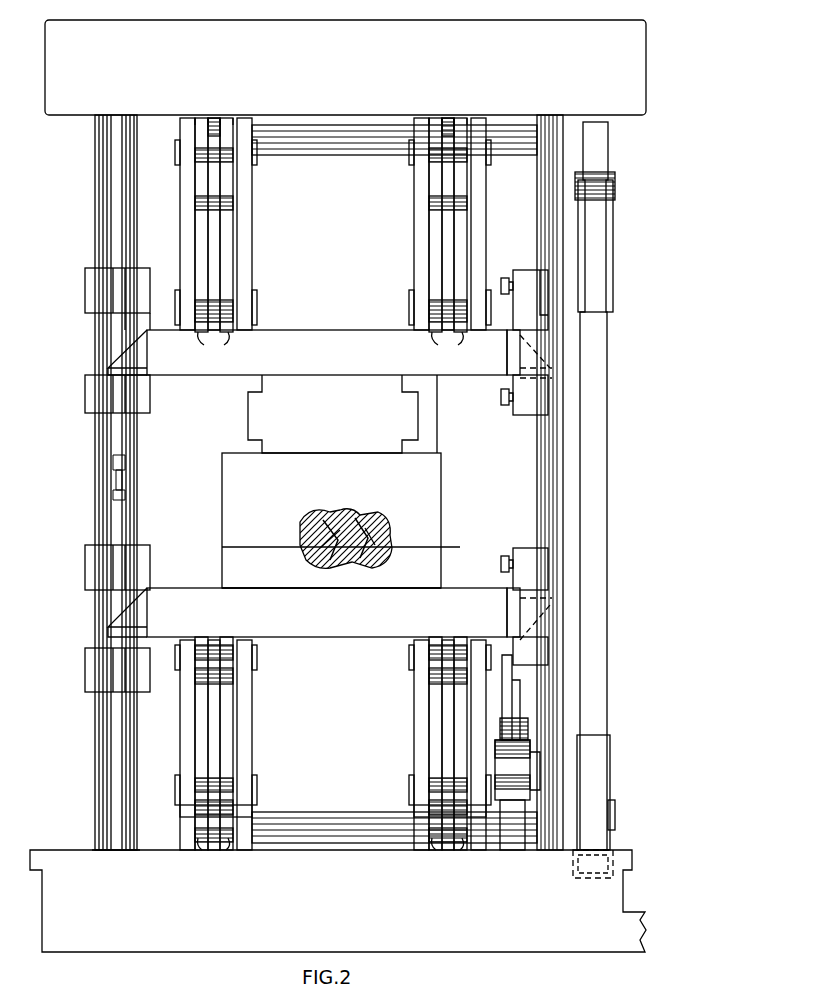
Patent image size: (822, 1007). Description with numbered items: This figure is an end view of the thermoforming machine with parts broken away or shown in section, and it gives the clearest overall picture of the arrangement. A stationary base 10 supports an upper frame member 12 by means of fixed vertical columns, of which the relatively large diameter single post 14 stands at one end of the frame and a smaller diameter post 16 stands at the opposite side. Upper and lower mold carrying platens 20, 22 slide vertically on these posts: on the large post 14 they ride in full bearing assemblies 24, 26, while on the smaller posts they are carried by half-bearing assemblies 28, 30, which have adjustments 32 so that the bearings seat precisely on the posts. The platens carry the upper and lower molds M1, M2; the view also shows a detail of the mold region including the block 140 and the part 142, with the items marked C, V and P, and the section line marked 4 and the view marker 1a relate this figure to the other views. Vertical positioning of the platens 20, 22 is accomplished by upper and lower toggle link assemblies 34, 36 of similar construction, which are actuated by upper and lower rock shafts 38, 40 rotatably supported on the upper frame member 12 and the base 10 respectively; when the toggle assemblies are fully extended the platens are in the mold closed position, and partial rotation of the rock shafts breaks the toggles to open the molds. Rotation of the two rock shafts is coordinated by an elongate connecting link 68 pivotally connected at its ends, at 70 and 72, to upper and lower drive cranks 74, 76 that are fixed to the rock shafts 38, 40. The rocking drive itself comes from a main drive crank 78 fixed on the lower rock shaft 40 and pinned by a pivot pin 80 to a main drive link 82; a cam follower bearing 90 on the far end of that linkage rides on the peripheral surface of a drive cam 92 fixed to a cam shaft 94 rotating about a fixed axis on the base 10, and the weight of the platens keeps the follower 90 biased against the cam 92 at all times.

The section line 4- 4 is at (268, 882).
The stationary base 10 is at (354, 903).
The upper frame member 12 is at (382, 73).
The vertical post 14 is at (100, 213).
The vertical post 16 is at (560, 217).
The view direction marker 1a is at (488, 104).
The upper mold carrying platen 20 is at (351, 363).
The lower mold carrying platen 22 is at (316, 630).
The full bearing assembly 24 is at (79, 306).
The full bearing assembly 26 is at (95, 574).
The half-bearing assembly 28 is at (538, 332).
The half-bearing assembly 30 is at (538, 577).
The adjustments 32 is at (504, 278).
The upper toggle link assembly 34 is at (242, 218).
The lower toggle link assembly 36 is at (215, 738).
The upper rock shaft 38 is at (352, 148).
The lower rock shaft 40 is at (300, 812).
The elongate connecting link 68 is at (596, 466).
The pivot connection 70 is at (615, 182).
The pivot connection 72 is at (630, 870).
The upper drive crank 74 is at (598, 160).
The lower drive crank 76 is at (590, 835).
The main drive crank 78 is at (520, 850).
The pivot pin 80 is at (612, 812).
The main drive link 82 is at (532, 776).
The cam follower bearing 90 is at (515, 758).
The drive cam 92 is at (505, 712).
The cam shaft 94 is at (530, 728).
The mold block 140 is at (278, 421).
The preform 142 is at (358, 575).
The cavity C is at (334, 518).
The vent V is at (374, 516).
The parting line P is at (450, 547).
The upper mold M1 is at (428, 498).
The lower mold M2 is at (283, 575).